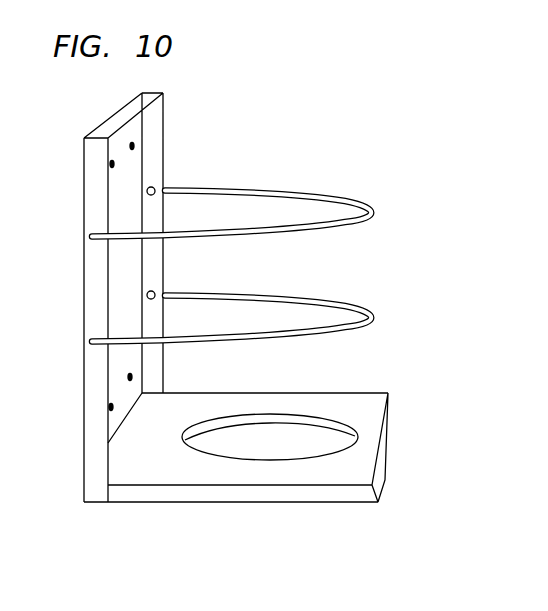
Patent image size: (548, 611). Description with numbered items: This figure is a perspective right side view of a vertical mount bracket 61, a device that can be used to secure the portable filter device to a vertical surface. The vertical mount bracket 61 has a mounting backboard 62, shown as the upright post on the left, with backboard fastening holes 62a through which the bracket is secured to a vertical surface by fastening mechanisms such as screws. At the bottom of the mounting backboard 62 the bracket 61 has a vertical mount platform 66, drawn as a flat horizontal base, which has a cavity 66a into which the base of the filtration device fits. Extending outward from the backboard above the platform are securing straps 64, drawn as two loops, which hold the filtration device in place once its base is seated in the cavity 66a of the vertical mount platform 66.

The vertical mount bracket 61 is at (383, 212).
The mounting backboard 62 is at (126, 114).
The backboard fastening holes 62a is at (114, 163).
The securing strap 64 is at (261, 252).
The vertical mount platform 66 is at (242, 475).
The cavity 66a is at (334, 440).